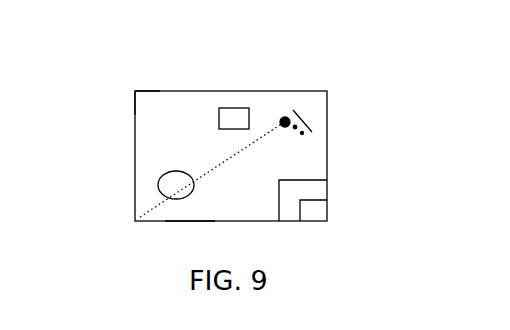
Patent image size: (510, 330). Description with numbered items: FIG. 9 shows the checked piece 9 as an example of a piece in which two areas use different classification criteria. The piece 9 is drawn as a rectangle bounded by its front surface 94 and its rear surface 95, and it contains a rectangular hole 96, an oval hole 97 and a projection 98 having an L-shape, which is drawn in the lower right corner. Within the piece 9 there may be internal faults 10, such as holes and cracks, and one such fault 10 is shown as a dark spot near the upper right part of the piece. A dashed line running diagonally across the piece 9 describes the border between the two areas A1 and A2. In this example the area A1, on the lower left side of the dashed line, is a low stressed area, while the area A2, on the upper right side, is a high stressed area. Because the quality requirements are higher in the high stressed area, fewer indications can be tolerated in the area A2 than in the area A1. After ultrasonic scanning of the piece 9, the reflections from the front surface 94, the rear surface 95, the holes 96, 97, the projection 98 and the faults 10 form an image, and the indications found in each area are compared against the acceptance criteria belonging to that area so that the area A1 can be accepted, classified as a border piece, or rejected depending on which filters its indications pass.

The piece 9 is at (211, 82).
The front surface 94 is at (146, 90).
The rear surface 95 is at (188, 222).
The rectangular hole 96 is at (238, 107).
The oval hole 97 is at (170, 183).
The projection 98 is at (315, 190).
The internal faults 10 is at (300, 112).
The area A1 is at (160, 142).
The area A2 is at (298, 157).